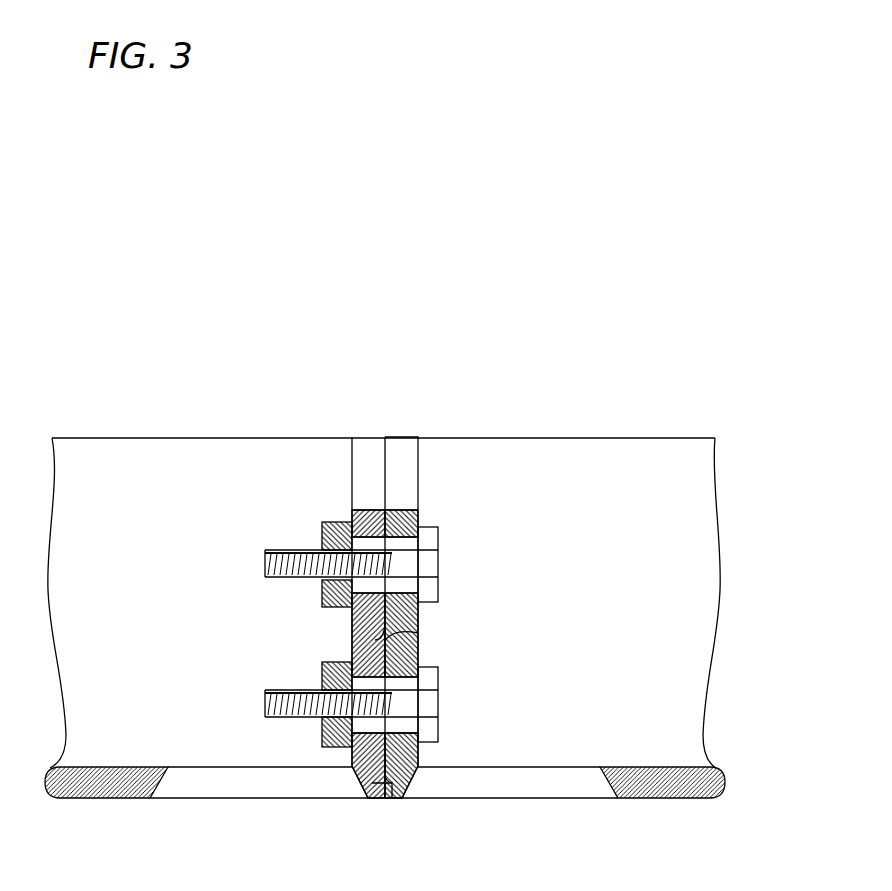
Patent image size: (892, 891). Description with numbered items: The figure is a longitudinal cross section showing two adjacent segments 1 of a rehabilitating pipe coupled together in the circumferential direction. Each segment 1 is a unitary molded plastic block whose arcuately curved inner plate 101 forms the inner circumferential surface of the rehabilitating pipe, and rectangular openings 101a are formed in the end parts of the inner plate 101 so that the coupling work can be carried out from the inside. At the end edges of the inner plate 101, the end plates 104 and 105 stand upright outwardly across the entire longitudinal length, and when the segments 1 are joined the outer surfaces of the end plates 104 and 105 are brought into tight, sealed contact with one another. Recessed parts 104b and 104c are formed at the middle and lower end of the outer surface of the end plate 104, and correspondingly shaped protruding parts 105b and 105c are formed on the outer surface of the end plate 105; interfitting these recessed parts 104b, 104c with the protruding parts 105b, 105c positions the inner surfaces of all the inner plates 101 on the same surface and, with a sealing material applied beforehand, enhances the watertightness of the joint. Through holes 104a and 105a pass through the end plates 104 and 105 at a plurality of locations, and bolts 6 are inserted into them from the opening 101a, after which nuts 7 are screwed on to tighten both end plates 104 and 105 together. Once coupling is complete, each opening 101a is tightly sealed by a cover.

The segment 1 is at (72, 426).
The bolt 6 is at (438, 535).
The nut 7 is at (318, 523).
The inner plate 101 is at (88, 786).
The rectangular opening 101a is at (223, 788).
The end plate 104 is at (400, 448).
The through hole 104a is at (400, 590).
The recessed part 104b is at (390, 633).
The recessed part 104c is at (400, 780).
The end plate 105 is at (375, 470).
The through hole 105a is at (368, 590).
The protruding part 105b is at (385, 633).
The protruding part 105c is at (392, 780).